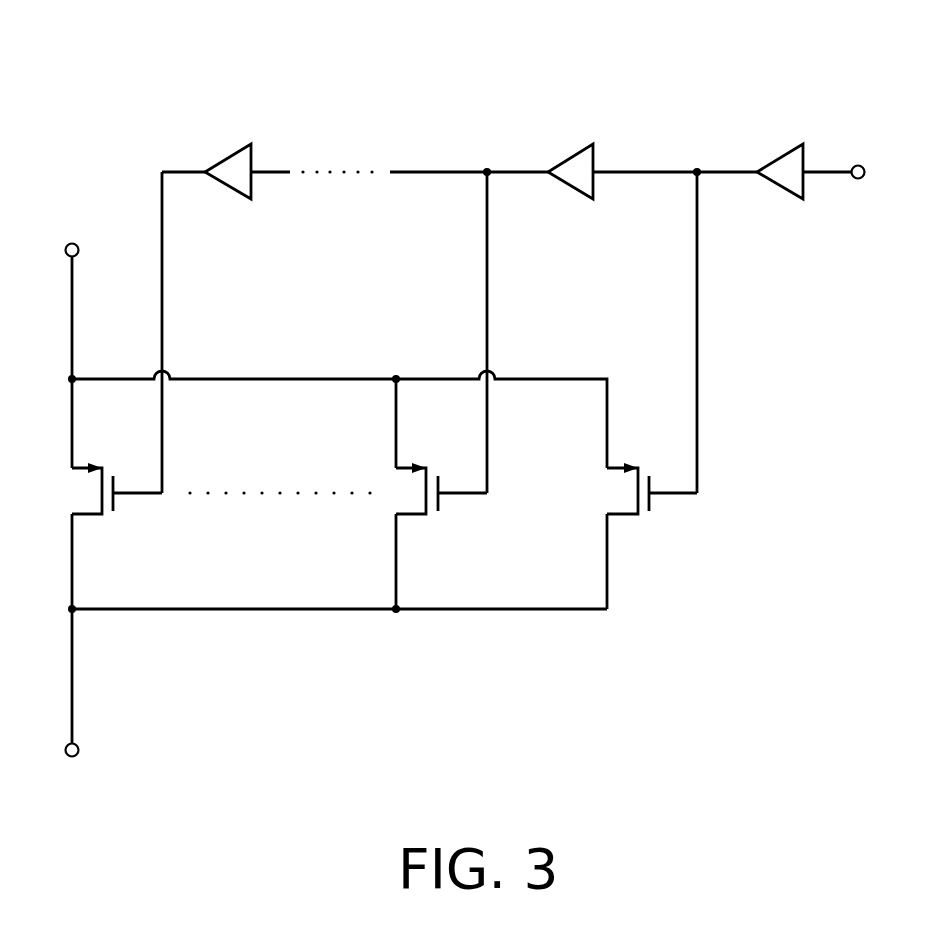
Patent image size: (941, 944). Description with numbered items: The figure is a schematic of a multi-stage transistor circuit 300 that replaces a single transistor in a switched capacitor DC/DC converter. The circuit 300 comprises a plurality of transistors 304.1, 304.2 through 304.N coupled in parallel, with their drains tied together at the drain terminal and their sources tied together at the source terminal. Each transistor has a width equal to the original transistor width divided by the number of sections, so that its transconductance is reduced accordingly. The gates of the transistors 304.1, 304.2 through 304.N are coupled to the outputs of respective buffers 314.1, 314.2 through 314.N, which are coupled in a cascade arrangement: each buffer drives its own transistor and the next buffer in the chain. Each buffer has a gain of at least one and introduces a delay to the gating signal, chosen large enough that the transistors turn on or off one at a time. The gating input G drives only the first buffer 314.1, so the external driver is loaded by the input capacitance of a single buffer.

The multi-stage transistor circuit 300 is at (507, 45).
The buffer 314.N is at (239, 156).
The buffer 314.2 is at (582, 156).
The buffer 314.1 is at (788, 156).
The transistor 304.N is at (117, 510).
The transistor 304.2 is at (441, 510).
The transistor 304.1 is at (652, 510).